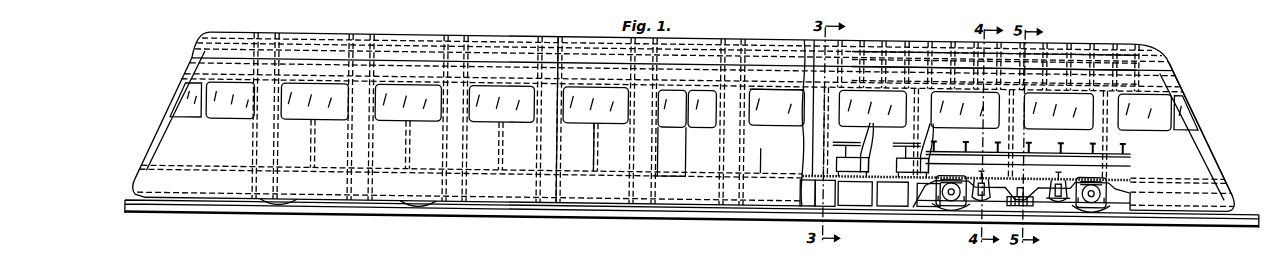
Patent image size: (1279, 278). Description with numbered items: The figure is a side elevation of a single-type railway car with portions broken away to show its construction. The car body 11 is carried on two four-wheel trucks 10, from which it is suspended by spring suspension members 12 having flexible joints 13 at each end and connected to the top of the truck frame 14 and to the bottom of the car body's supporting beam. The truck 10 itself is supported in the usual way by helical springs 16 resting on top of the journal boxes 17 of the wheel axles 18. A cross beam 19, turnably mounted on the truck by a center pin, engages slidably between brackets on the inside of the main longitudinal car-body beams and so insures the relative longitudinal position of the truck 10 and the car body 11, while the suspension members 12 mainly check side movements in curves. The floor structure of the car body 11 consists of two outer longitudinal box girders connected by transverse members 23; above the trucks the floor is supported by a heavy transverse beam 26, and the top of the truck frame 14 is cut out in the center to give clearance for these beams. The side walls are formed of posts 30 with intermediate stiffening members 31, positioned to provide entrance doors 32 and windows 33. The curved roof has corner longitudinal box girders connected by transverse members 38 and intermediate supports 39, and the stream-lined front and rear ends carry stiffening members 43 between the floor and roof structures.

The four-wheel truck 10 is at (408, 204).
The car body 11 is at (765, 154).
The spring suspension member 12 is at (1053, 188).
The flexible joint 13 is at (1062, 187).
The truck frame 14 is at (1036, 192).
The helical spring 16 is at (1107, 181).
The journal box 17 is at (1100, 186).
The wheel axle 18 is at (1090, 184).
The cross beam 19 is at (1010, 191).
The transverse member 23 is at (875, 184).
The heavy transverse beam 26 is at (1003, 179).
The post 30 is at (560, 144).
The intermediate stiffening member 31 is at (595, 144).
The entrance door 32 is at (682, 130).
The window 33 is at (776, 102).
The transverse member 38 is at (908, 53).
The intermediate support 39 is at (885, 50).
The stiffening member 43 is at (1200, 101).